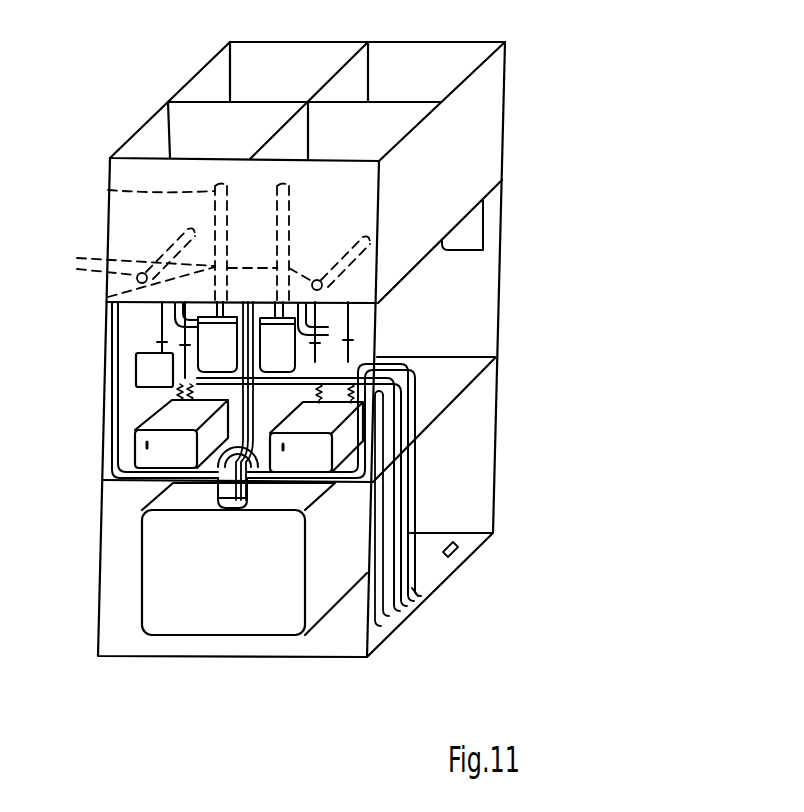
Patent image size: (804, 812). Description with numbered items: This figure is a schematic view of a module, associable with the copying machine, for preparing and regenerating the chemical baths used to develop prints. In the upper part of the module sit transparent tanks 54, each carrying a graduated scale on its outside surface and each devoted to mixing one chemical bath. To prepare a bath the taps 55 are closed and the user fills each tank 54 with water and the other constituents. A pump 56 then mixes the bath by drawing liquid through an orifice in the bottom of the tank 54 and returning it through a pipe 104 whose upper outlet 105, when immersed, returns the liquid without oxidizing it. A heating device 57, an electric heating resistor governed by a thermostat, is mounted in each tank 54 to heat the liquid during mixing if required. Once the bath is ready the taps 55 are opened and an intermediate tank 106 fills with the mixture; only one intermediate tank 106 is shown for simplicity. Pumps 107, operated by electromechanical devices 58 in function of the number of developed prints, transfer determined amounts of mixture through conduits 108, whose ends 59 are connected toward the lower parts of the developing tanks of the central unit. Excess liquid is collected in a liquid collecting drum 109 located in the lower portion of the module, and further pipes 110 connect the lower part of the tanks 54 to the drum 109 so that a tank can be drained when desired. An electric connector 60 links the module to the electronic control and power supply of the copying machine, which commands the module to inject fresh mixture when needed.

The transparent tank 54 is at (298, 52).
The tap 55 is at (372, 330).
The pump 56 is at (217, 345).
The heating device 57 is at (212, 259).
The electromechanical device 58 is at (170, 452).
The end of pipe 59 is at (415, 592).
The electric connector 60 is at (458, 548).
The pipe 104 is at (176, 316).
The upper outlet 105 is at (108, 190).
The intermediate tank 106 is at (147, 368).
The pump 107 is at (177, 392).
The conduit 108 is at (400, 598).
The liquid collecting drum 109 is at (222, 620).
The pipe 110 is at (117, 457).